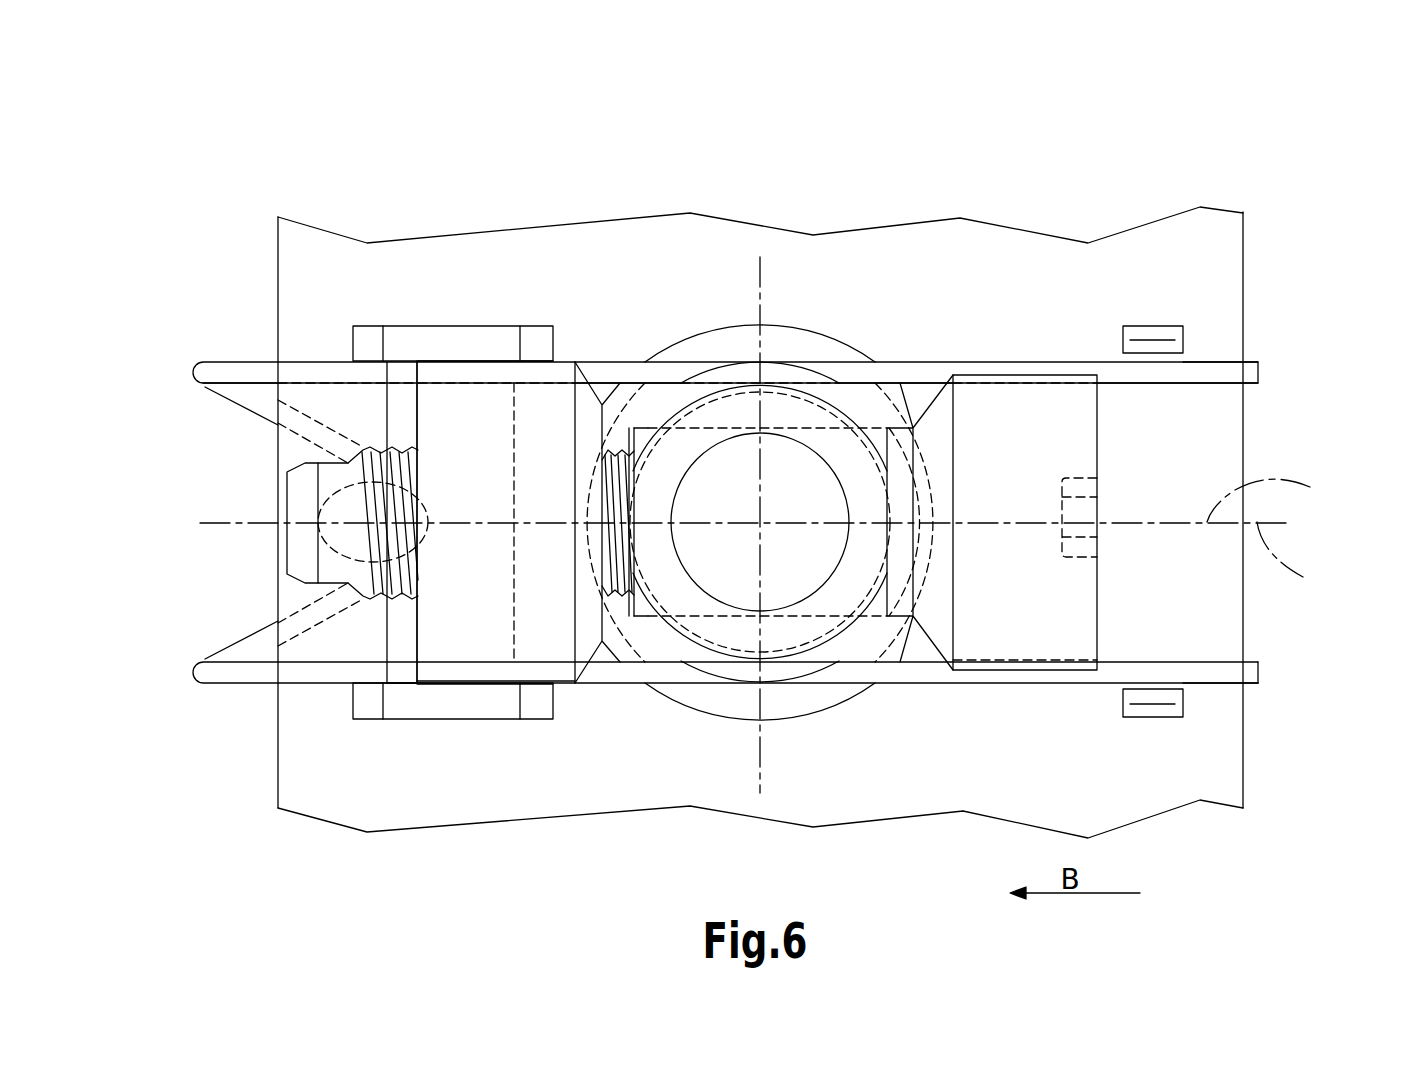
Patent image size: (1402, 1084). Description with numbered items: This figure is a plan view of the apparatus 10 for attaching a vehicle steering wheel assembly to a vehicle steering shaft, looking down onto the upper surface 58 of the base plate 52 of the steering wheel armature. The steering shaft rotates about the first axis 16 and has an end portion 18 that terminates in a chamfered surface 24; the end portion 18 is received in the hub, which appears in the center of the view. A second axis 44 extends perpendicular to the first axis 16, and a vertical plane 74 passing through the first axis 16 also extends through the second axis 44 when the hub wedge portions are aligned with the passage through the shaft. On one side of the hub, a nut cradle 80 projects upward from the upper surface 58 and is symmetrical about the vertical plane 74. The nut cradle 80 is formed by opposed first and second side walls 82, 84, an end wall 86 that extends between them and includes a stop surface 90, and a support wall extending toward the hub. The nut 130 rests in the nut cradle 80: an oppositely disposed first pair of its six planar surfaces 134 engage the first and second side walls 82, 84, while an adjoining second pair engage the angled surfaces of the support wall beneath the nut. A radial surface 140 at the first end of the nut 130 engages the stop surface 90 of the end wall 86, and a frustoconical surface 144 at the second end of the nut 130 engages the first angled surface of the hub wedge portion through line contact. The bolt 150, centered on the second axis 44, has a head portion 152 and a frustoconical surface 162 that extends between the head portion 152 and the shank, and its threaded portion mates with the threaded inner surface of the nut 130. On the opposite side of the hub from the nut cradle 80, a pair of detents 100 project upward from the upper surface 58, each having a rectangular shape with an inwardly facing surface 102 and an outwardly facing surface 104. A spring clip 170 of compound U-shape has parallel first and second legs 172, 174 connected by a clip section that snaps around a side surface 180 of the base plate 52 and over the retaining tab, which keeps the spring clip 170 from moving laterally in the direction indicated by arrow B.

The apparatus 10 is at (998, 186).
The first axis 16 is at (764, 527).
The end portion 18 is at (777, 600).
The chamfered surface 24 is at (800, 402).
The second axis 44 is at (1302, 557).
The base plate 52 is at (1198, 243).
The upper surface 58 is at (1220, 273).
The vertical plane 74 is at (1207, 516).
The nut cradle 80 is at (497, 523).
The first side wall 82 is at (427, 710).
The second side wall 84 is at (413, 338).
The end wall 86 is at (397, 643).
The stop surface 90 is at (503, 692).
The detents 100 is at (1173, 342).
The inwardly facing surface 102 is at (1160, 352).
The outwardly facing surface 104 is at (1142, 326).
The nut 130 is at (447, 402).
The planar surfaces 134 is at (498, 360).
The radial surface 140 is at (395, 620).
The frustoconical surface 144 is at (600, 364).
The bolt 150 is at (1155, 478).
The head portion 152 is at (1015, 420).
The frustoconical surface 162 is at (937, 398).
The spring clip 170 is at (675, 520).
The first leg 172 is at (242, 677).
The second leg 174 is at (227, 370).
The side surface 180 is at (278, 597).